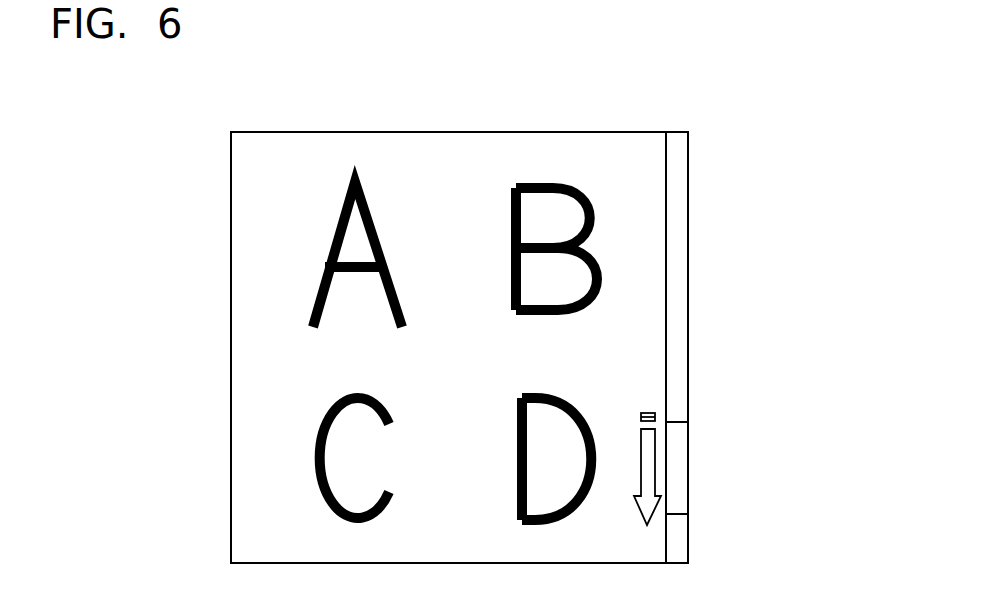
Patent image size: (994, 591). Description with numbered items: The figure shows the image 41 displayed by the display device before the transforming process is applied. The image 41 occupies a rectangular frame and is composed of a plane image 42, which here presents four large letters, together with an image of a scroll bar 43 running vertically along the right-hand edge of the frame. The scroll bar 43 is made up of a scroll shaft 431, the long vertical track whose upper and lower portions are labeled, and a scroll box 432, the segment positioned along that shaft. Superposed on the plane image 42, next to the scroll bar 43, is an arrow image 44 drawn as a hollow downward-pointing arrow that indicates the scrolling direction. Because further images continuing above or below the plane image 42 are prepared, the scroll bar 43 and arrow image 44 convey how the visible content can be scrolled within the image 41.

The image 41 is at (308, 120).
The plane image 42 is at (238, 186).
The scroll bar 43 is at (678, 194).
The scroll shaft 431 is at (675, 281).
The scroll box 432 is at (677, 443).
The arrow image 44 is at (660, 453).